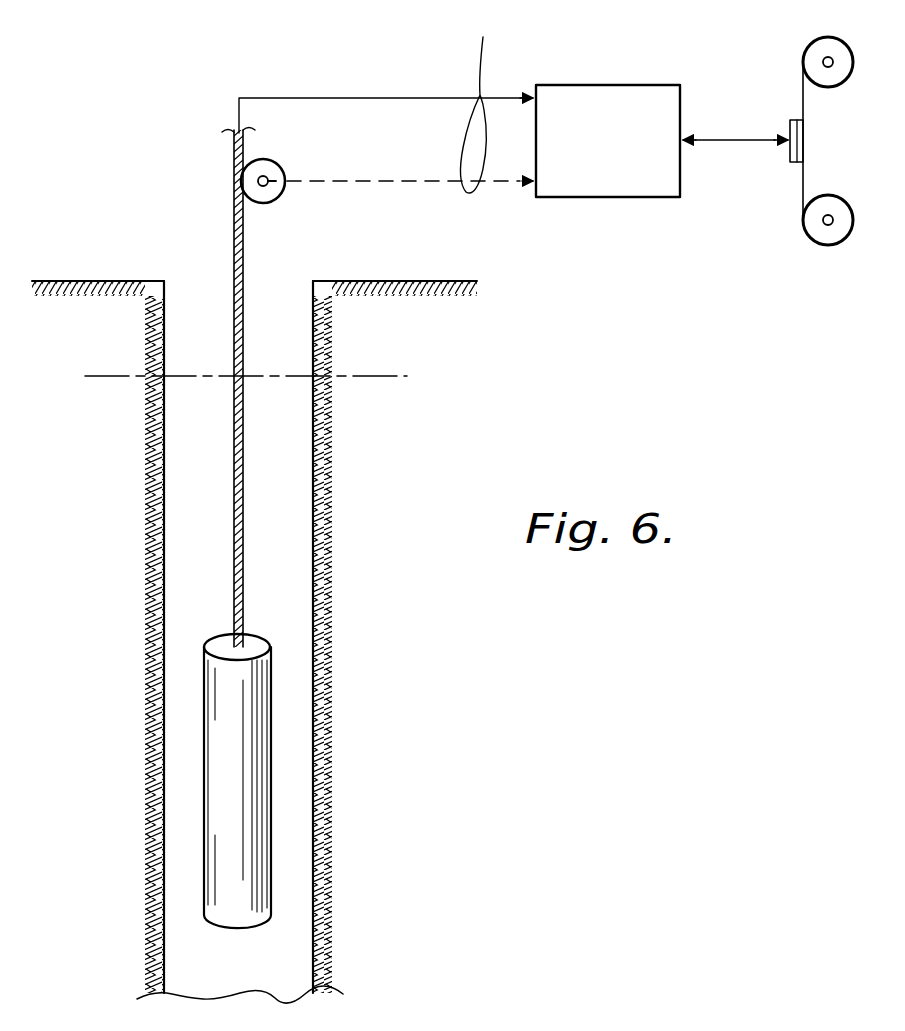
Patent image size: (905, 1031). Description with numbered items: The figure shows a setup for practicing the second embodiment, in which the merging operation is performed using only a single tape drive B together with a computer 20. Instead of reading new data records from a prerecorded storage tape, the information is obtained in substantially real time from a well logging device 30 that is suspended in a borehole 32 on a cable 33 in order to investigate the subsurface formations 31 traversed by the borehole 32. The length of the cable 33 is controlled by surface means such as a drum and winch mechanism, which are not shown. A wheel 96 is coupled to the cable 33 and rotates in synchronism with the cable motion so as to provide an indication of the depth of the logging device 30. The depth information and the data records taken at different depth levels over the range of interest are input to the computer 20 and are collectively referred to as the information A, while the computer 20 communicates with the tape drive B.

The computer 20 is at (627, 80).
The well logging device 30 is at (207, 726).
The subsurface formations 31 is at (80, 281).
The borehole 32 is at (199, 274).
The cable 33 is at (233, 201).
The wheel 96 is at (277, 196).
The information A is at (485, 101).
The tape drive B is at (786, 100).